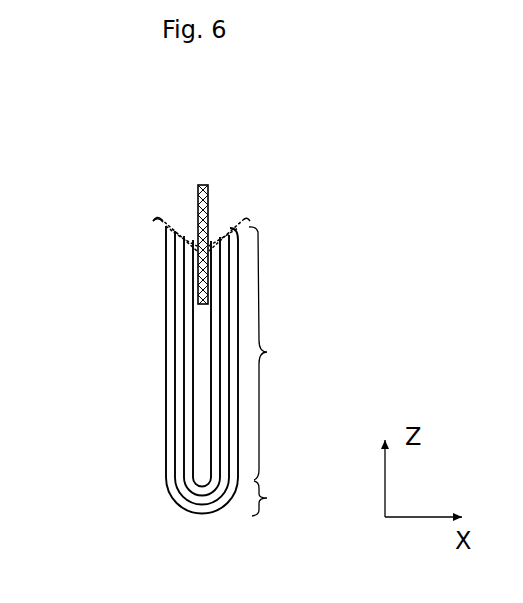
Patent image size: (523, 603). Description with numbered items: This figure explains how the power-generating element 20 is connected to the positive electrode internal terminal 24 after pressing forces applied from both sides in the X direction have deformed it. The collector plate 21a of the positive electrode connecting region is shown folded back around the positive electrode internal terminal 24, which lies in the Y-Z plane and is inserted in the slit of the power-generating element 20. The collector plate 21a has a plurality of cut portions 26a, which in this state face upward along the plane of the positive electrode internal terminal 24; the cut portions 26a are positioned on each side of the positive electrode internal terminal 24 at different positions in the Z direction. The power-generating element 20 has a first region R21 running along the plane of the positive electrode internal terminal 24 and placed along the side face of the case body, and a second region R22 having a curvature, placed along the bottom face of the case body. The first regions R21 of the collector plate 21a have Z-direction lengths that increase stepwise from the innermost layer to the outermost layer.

The power-generating element 20 is at (141, 466).
The collector plate 21a is at (167, 393).
The positive electrode internal terminal 24 is at (197, 206).
The cut portions 26a is at (162, 222).
The first region R21 is at (286, 353).
The second region R22 is at (285, 498).